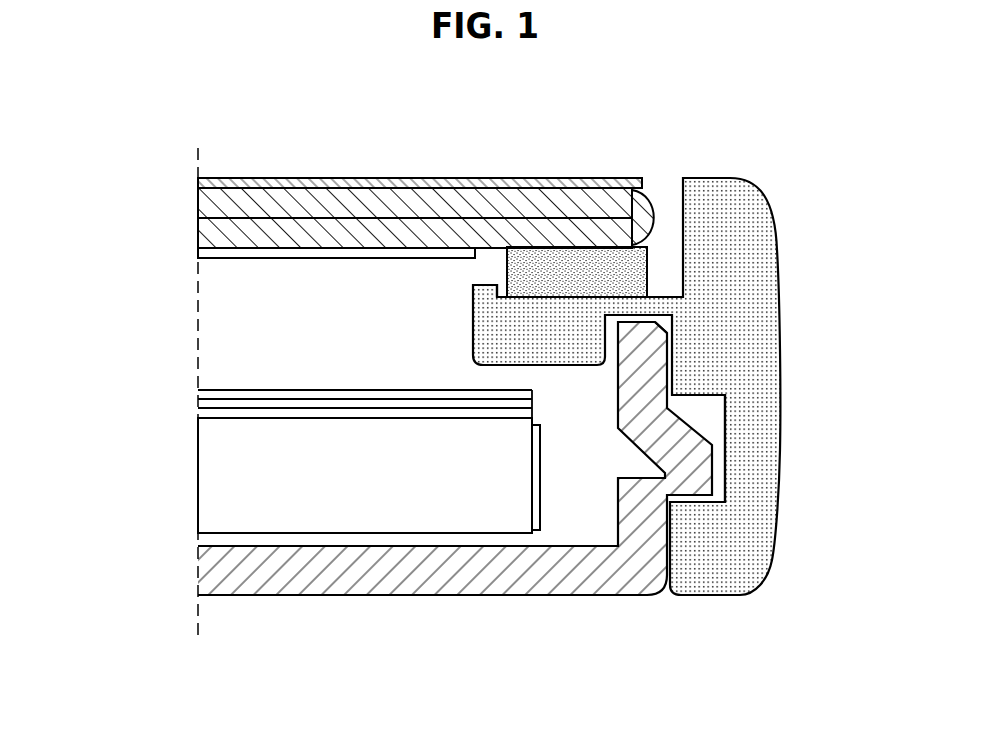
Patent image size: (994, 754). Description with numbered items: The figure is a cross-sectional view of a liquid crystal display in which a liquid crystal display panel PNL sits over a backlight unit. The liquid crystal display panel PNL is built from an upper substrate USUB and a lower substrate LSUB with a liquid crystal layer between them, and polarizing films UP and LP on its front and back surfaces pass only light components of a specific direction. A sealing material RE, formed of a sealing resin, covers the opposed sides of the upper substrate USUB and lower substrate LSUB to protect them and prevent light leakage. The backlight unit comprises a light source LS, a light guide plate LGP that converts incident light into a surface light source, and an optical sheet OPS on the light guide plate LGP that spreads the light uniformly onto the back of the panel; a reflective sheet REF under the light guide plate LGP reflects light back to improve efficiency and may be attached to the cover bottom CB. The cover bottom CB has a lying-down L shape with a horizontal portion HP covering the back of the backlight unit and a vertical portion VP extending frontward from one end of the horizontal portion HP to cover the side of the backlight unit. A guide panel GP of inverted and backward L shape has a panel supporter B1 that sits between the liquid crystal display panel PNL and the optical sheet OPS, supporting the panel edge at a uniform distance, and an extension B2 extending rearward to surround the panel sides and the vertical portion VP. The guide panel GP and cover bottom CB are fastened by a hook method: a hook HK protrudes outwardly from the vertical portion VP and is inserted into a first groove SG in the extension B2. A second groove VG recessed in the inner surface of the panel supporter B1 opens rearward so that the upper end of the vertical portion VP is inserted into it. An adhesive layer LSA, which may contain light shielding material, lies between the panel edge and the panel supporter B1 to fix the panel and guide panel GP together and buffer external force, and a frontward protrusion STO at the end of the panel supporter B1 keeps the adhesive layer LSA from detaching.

The liquid crystal display panel PNL is at (104, 163).
The polarizing film UP is at (200, 183).
The upper substrate USUB is at (208, 205).
The lower substrate LSUB is at (208, 238).
The polarizing film LP is at (205, 253).
The sealing material RE is at (648, 208).
The protrusion STO is at (492, 288).
The adhesive layer LSA is at (573, 262).
The guide panel GP is at (697, 386).
The panel supporter B1 is at (583, 353).
The extension B2 is at (772, 522).
The second groove VG is at (658, 321).
The optical sheet OPS is at (189, 392).
The light source LS is at (538, 460).
The light guide plate LGP is at (205, 493).
The reflective sheet REF is at (207, 540).
The cover bottom CB is at (455, 517).
The horizontal portion HP is at (582, 583).
The vertical portion VP is at (637, 513).
The hook HK is at (660, 443).
The first groove SG is at (718, 406).